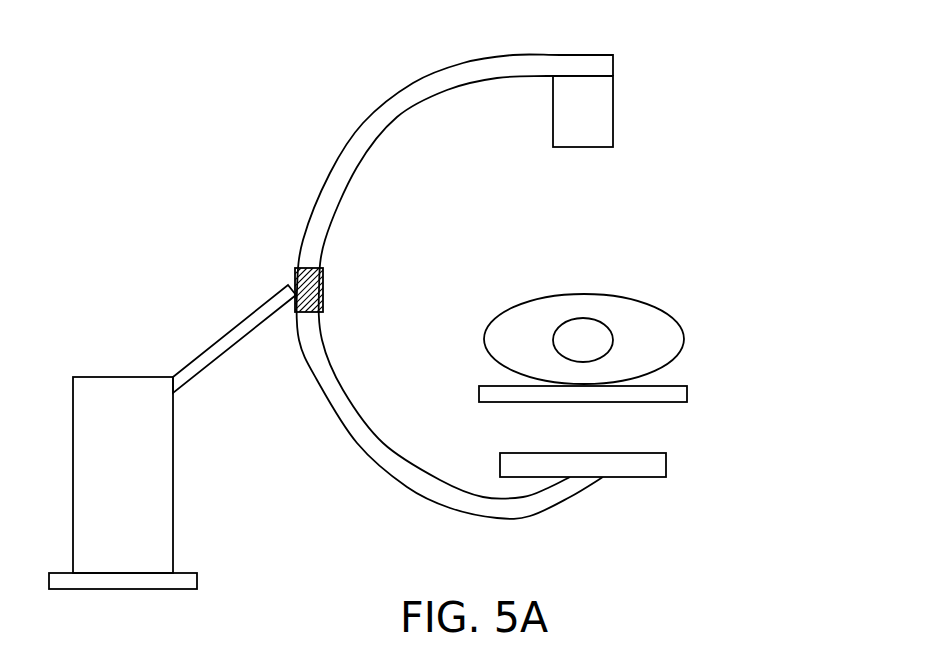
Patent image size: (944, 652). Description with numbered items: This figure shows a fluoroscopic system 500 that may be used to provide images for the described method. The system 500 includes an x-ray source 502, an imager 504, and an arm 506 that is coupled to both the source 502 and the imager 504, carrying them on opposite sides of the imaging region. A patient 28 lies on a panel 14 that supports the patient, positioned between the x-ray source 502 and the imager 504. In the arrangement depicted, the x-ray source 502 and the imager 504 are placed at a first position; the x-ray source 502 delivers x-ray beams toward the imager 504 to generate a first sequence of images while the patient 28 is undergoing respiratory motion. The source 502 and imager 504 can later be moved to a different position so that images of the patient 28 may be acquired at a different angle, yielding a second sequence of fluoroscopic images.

The system 500 is at (716, 43).
The x-ray source 502 is at (613, 147).
The imager 504 is at (666, 465).
The arm 506 is at (398, 123).
The patient 28 is at (684, 339).
The panel 14 is at (673, 393).